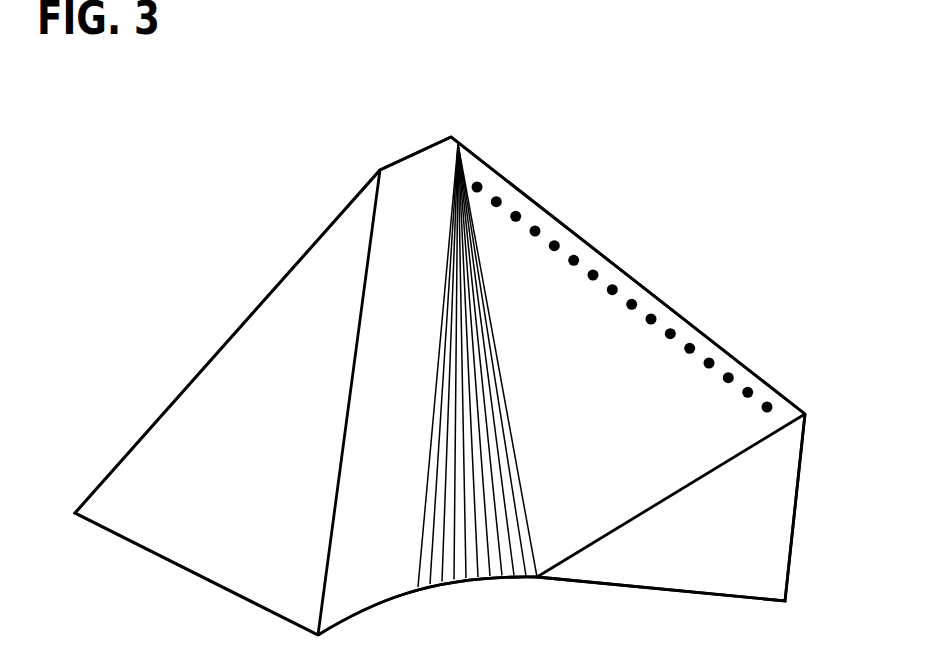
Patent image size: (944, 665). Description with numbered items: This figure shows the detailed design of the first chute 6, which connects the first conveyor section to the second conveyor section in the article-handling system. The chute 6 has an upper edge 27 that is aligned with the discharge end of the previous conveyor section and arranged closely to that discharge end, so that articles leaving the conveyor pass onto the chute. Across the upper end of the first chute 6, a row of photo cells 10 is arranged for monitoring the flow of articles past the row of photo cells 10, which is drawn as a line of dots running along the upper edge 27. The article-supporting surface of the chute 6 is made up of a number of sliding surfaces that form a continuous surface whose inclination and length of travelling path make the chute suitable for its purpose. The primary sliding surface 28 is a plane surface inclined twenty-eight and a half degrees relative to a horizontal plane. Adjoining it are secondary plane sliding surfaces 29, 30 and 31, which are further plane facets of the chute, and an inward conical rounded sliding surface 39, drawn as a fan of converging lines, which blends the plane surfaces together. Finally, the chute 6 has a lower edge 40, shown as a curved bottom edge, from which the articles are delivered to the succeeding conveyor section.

The first chute 6 is at (213, 140).
The row of photo cells 10 is at (753, 380).
The upper edge 27 is at (617, 237).
The primary sliding surface 28 is at (662, 383).
The secondary plane sliding surface 29 is at (218, 385).
The secondary plane sliding surface 30 is at (410, 193).
The secondary plane sliding surface 31 is at (773, 510).
The inward conical rounded sliding surface 39 is at (492, 330).
The lower edge 40 is at (520, 590).